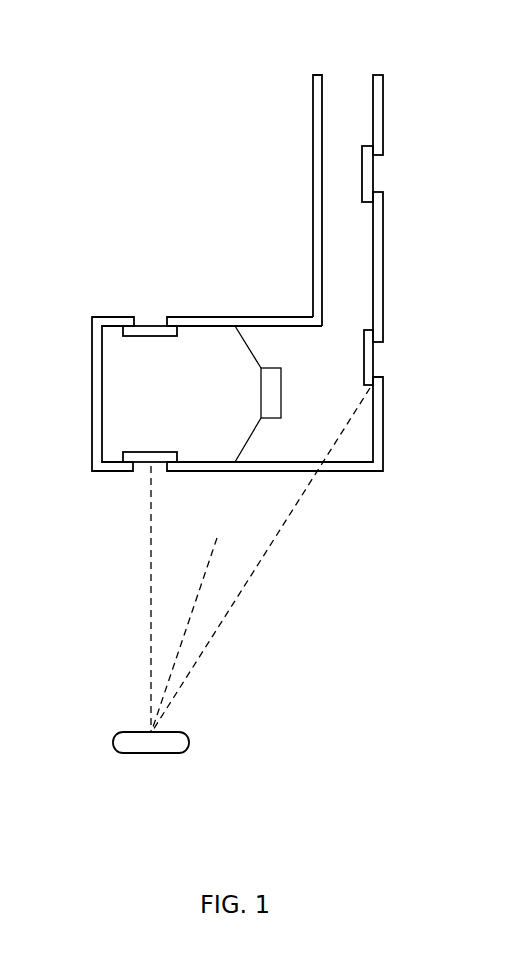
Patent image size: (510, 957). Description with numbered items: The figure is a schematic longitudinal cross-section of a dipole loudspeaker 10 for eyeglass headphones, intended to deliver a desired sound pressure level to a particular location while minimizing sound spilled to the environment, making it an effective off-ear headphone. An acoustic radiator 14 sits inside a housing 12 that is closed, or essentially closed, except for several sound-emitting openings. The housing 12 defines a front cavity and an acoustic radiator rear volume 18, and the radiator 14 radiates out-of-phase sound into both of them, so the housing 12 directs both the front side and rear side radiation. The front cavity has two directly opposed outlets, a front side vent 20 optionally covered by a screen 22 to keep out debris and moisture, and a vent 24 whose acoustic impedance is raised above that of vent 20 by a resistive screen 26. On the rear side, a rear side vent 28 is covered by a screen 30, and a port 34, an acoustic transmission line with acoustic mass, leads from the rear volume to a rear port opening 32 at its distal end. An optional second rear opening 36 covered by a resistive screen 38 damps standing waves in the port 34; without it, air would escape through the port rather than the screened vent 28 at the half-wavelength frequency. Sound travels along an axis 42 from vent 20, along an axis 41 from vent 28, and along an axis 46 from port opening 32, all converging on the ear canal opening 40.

The dipole loudspeaker 10 is at (57, 242).
The housing 12 is at (203, 317).
The acoustic radiator 14 is at (282, 397).
The acoustic radiator rear volume 18 is at (358, 450).
The front side opening or vent 20 is at (143, 468).
The screen 22 is at (122, 455).
The vent 24 is at (148, 323).
The resistive screen 26 is at (122, 337).
The rear side opening or vent 28 is at (382, 365).
The screen 30 is at (366, 345).
The rear port opening 32 is at (343, 82).
The port 34 is at (312, 180).
The second rear opening 36 is at (380, 182).
The resistive screen 38 is at (367, 167).
The ear canal opening 40 is at (137, 752).
The axis 41 is at (222, 633).
The axis 42 is at (148, 638).
The axis 46 is at (169, 671).